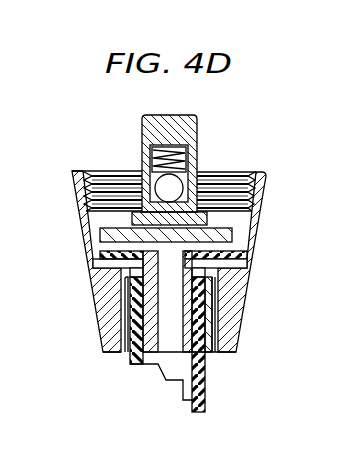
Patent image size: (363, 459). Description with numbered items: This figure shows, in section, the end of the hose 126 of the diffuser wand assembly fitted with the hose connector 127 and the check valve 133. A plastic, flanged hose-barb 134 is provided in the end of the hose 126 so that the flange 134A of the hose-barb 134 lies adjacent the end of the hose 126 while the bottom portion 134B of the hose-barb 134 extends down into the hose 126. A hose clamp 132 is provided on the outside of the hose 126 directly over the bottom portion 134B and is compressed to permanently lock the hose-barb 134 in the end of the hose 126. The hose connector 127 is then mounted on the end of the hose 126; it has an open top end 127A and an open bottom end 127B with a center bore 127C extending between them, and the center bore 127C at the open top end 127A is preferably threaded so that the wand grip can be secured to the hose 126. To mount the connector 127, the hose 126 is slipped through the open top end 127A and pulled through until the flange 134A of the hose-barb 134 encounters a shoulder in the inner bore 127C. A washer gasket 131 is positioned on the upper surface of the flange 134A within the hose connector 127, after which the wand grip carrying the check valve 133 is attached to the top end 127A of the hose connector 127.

The hose 126 is at (197, 400).
The hose connector 127 is at (174, 238).
The open top end 127A is at (77, 171).
The open bottom end 127B is at (242, 333).
The center bore 127C is at (105, 313).
The washer gasket 131 is at (217, 228).
The hose clamp 132 is at (125, 353).
The check valve 133 is at (152, 114).
The hose-barb 134 is at (213, 330).
The flange 134A is at (247, 255).
The bottom portion 134B is at (200, 300).